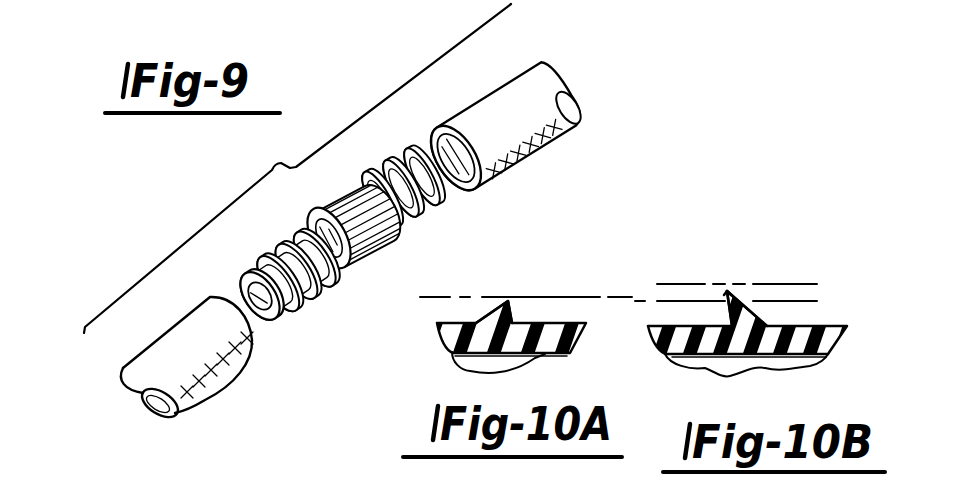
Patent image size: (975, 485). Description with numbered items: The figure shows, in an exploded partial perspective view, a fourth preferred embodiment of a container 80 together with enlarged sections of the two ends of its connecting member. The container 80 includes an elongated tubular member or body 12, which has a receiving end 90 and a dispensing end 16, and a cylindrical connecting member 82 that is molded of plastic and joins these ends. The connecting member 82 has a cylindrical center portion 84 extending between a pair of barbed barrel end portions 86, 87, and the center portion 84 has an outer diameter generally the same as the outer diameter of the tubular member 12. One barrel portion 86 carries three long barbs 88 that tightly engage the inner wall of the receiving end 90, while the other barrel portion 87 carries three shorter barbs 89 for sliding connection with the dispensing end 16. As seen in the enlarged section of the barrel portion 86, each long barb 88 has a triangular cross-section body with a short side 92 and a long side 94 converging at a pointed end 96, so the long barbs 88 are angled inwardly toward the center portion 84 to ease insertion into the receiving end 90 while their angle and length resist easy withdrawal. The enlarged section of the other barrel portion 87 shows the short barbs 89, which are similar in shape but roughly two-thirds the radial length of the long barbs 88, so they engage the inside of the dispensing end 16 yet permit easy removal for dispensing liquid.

In FIG. 9, the elongated tubular member 12 is at (362, 232).
In FIG. 9, the dispensing end 16 is at (233, 362).
In FIG. 9, the container 80 is at (297, 168).
In FIG. 9, the connecting member 82 is at (366, 236).
In FIG. 9, the cylindrical center portion 84 is at (392, 240).
In FIG. 9, the barbed barrel end portion 86 is at (414, 222).
In FIG. 10B, the barbed barrel end portion 86 is at (840, 363).
In FIG. 9, the barbed barrel end portion 87 is at (304, 298).
In FIG. 10A, the barbed barrel end portion 87 is at (420, 346).
In FIG. 10B, the long barbs 88 is at (705, 368).
In FIG. 10A, the short barbs 89 is at (495, 316).
In FIG. 9, the receiving end 90 is at (543, 146).
In FIG. 10B, the short side 92 is at (723, 312).
In FIG. 10B, the long side 94 is at (750, 306).
In FIG. 10B, the pointed end 96 is at (727, 291).